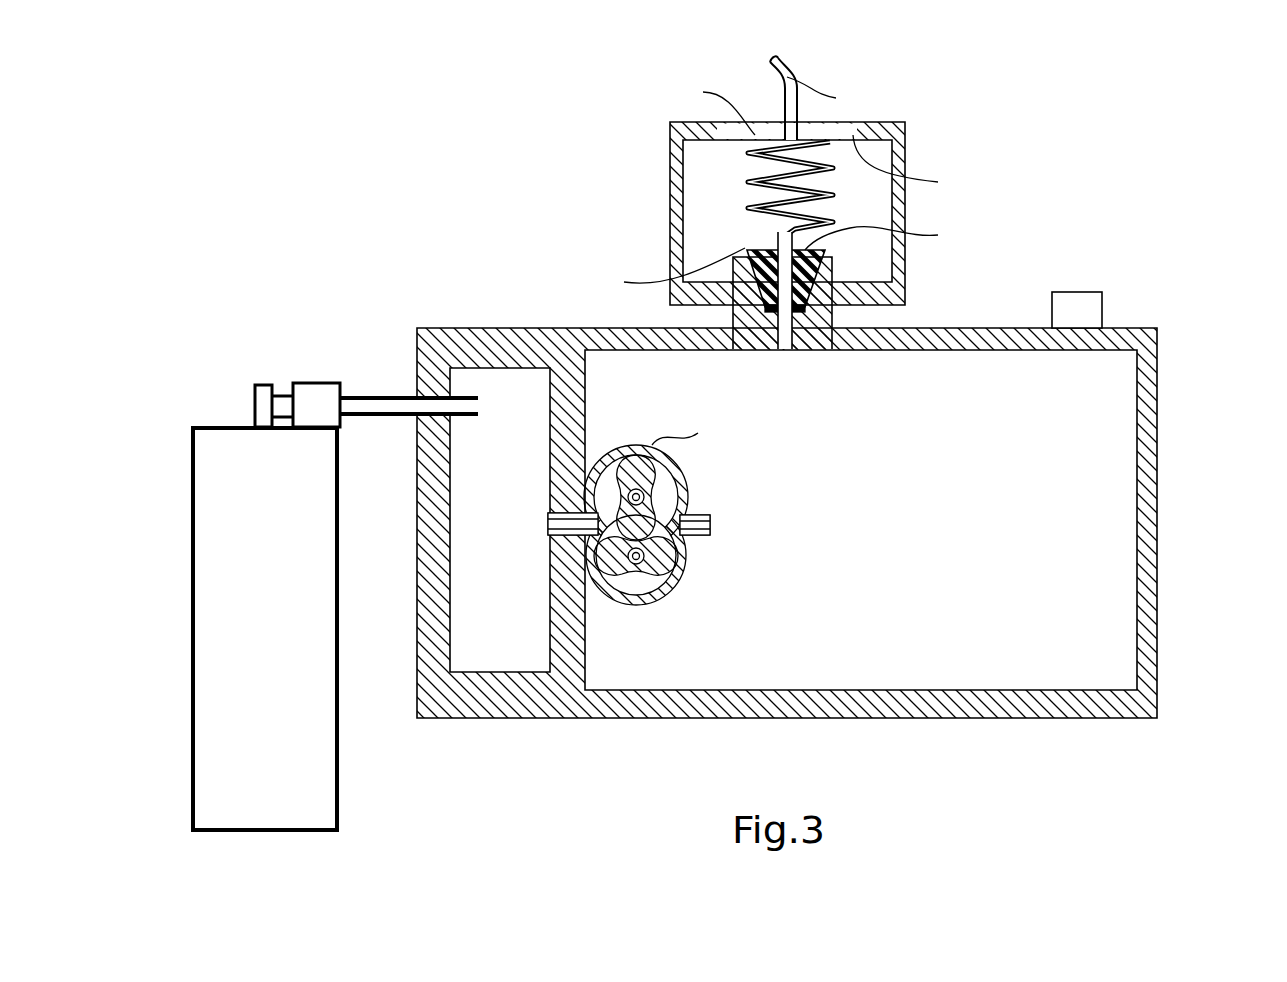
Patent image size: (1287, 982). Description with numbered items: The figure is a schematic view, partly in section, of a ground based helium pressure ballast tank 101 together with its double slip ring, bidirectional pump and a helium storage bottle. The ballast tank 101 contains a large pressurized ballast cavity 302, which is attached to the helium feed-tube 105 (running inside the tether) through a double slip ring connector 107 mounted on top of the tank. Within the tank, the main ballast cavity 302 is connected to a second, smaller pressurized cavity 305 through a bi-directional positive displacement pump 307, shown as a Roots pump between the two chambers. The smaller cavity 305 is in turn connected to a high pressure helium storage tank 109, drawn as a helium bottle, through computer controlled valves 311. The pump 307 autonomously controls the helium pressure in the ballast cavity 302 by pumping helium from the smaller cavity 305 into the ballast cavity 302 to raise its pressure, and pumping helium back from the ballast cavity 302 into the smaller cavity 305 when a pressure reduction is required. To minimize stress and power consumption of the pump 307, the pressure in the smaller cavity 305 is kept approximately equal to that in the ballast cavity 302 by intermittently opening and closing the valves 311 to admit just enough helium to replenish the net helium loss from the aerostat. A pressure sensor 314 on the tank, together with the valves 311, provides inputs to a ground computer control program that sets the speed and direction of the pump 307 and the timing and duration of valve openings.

The helium ballast tank 101 is at (1157, 487).
The feed-tube 105 is at (793, 63).
The double slip ring connector 107 is at (672, 190).
The high pressure helium storage tank 109 is at (223, 731).
The ground based ballast cavity 302 is at (945, 500).
The second smaller pressurized cavity 305 is at (520, 613).
The bi-directional positive displacement pump 307 is at (690, 492).
The computer controlled valves 311 is at (265, 392).
The pressure sensor 314 is at (1090, 313).